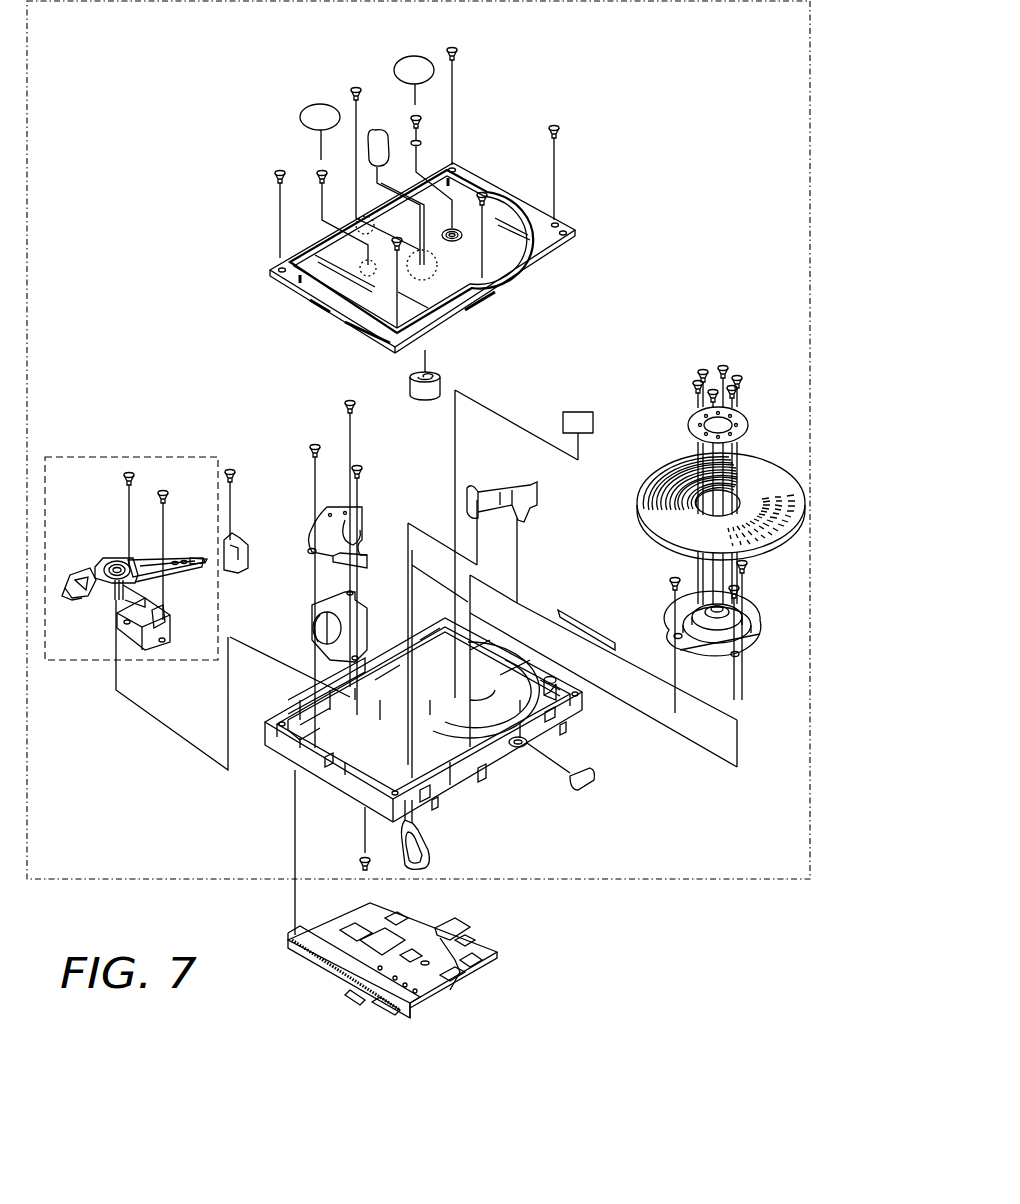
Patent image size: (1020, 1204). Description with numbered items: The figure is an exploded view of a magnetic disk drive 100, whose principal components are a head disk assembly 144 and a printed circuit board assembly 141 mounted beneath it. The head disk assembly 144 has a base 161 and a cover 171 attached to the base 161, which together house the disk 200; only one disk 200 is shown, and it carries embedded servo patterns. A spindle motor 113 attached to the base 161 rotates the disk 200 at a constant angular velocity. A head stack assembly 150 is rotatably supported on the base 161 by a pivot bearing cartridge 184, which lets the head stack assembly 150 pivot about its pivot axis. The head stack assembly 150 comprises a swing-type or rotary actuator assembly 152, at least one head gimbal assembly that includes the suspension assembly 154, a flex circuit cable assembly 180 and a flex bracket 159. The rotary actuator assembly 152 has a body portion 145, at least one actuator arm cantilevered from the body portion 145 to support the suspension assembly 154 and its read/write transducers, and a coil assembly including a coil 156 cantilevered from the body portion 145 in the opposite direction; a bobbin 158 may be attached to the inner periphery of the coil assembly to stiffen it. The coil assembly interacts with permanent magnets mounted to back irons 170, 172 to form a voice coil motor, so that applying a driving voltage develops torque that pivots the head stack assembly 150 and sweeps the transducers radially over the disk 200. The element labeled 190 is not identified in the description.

The magnetic disk drive 100 is at (667, 905).
The spindle motor 113 is at (660, 610).
The printed circuit board assembly 141 is at (443, 987).
The head disk assembly 144 is at (568, 881).
The body portion 145 is at (127, 560).
The head stack assembly 150 is at (100, 455).
The rotary actuator assembly 152 is at (142, 557).
The suspension assembly 154 is at (202, 558).
The coil 156 is at (72, 598).
The bobbin 158 is at (88, 577).
The flex bracket 159 is at (170, 617).
The base 161 is at (470, 786).
The back iron 170 is at (312, 530).
The cover 171 is at (540, 257).
The back iron 172 is at (365, 603).
The flex circuit cable assembly 180 is at (147, 588).
The pivot bearing cartridge 184 is at (107, 563).
The latch member 190 is at (330, 623).
The disk 200 is at (653, 468).